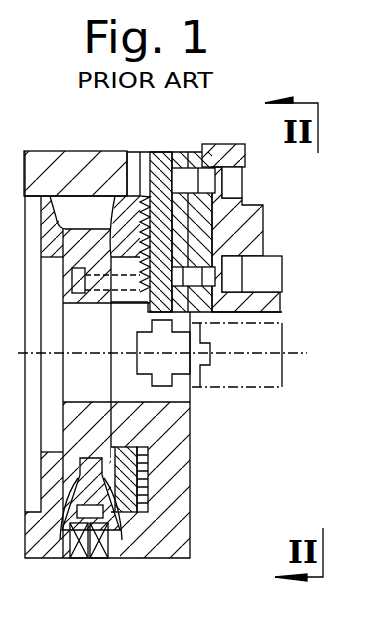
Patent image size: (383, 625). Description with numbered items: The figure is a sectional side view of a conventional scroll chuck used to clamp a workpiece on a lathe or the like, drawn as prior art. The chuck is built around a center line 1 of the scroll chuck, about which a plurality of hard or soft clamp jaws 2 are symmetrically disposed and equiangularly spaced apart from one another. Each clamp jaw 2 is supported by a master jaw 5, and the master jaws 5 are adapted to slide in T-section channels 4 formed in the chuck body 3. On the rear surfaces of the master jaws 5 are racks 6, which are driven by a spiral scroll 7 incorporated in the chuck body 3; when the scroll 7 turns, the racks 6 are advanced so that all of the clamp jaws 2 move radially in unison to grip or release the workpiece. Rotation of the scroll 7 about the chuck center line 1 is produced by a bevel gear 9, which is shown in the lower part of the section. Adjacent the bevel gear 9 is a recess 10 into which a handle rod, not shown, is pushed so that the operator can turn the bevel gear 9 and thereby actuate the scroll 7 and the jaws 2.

The center line 1 is at (300, 343).
The clamp jaws 2 is at (258, 231).
The chuck body 3 is at (80, 151).
The T-section channels 4 is at (177, 378).
The master jaws 5 is at (180, 151).
The racks 6 is at (131, 153).
The spiral scroll 7 is at (150, 480).
The bevel gear 9 is at (117, 562).
The recess 10 is at (81, 562).